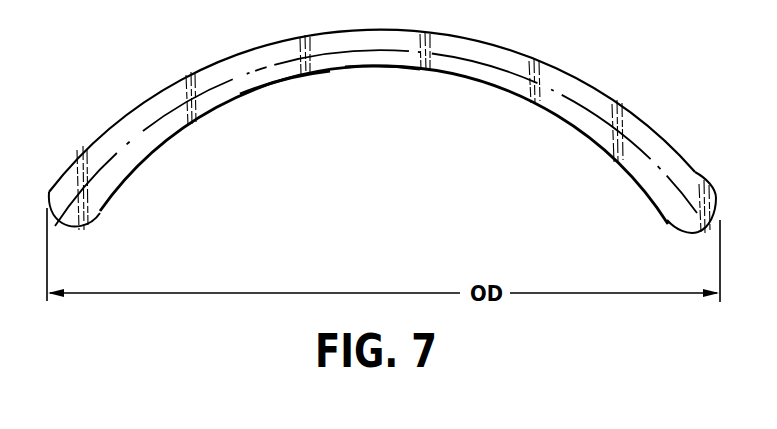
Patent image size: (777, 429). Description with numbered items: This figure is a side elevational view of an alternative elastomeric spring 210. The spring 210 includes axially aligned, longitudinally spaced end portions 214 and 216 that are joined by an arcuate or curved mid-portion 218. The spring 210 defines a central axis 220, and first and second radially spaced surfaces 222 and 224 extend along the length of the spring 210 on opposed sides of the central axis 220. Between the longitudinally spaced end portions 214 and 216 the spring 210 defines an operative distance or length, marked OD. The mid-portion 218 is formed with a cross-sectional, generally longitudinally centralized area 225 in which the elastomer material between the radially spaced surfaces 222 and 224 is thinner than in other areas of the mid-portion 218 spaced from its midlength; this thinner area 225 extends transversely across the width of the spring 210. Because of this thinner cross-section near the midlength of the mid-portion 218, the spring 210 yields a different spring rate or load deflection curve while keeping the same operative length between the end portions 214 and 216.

The elastomeric spring 210 is at (628, 90).
The end portion 214 is at (94, 209).
The end portion 216 is at (672, 220).
The mid-portion 218 is at (283, 75).
The central axis 220 is at (175, 112).
The first radially spaced surface 222 is at (163, 89).
The second radially spaced surface 224 is at (579, 133).
The longitudinally centralized area 225 is at (381, 62).